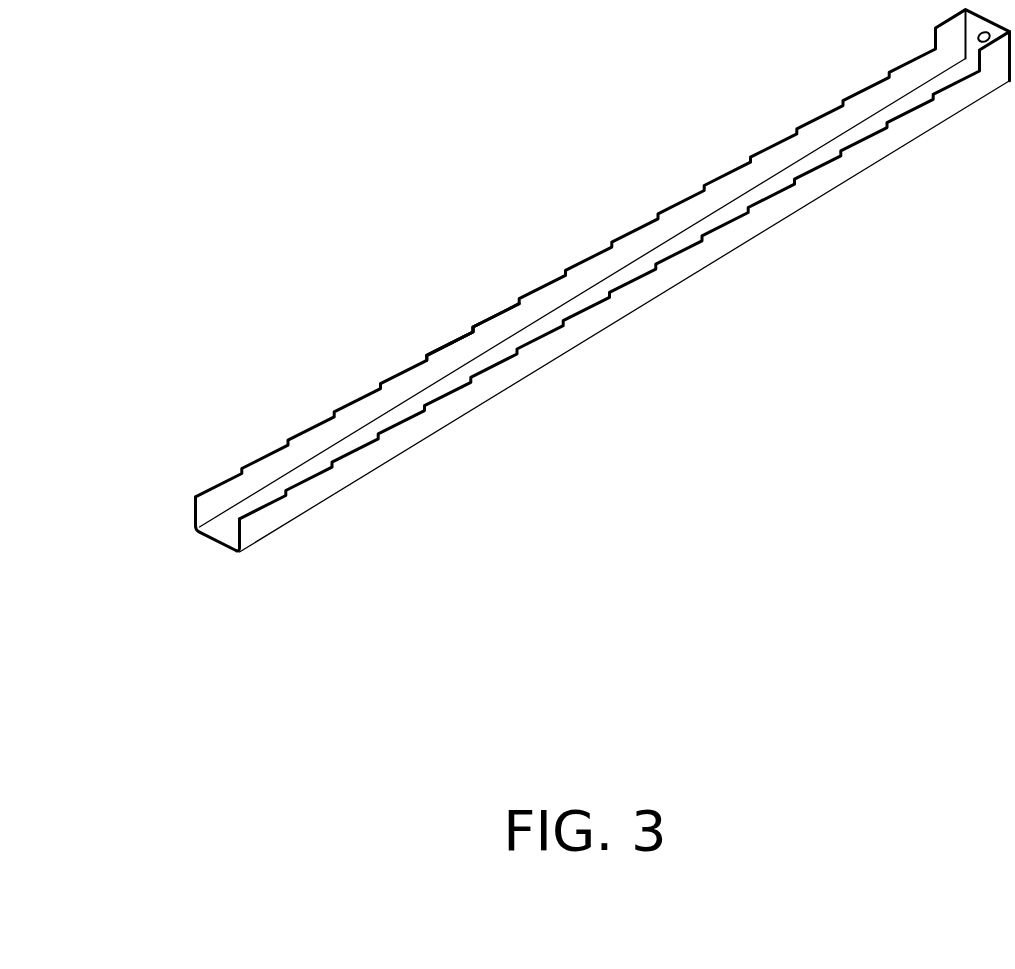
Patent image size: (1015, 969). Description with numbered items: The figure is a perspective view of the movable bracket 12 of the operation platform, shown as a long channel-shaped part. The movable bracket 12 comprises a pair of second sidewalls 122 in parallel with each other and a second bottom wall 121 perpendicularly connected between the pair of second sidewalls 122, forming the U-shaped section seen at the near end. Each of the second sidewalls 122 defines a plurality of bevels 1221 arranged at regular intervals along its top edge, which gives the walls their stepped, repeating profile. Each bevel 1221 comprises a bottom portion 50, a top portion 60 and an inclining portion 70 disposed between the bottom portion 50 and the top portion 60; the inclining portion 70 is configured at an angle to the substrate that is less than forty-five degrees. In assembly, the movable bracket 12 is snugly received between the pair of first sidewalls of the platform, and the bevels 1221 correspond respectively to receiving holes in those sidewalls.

The movable bracket 12 is at (566, 342).
The second bottom wall 121 is at (225, 548).
The second sidewall 122 is at (568, 312).
The bevel 1221 is at (433, 275).
The bottom portion 50 is at (459, 290).
The top portion 60 is at (440, 338).
The inclining portion 70 is at (453, 337).